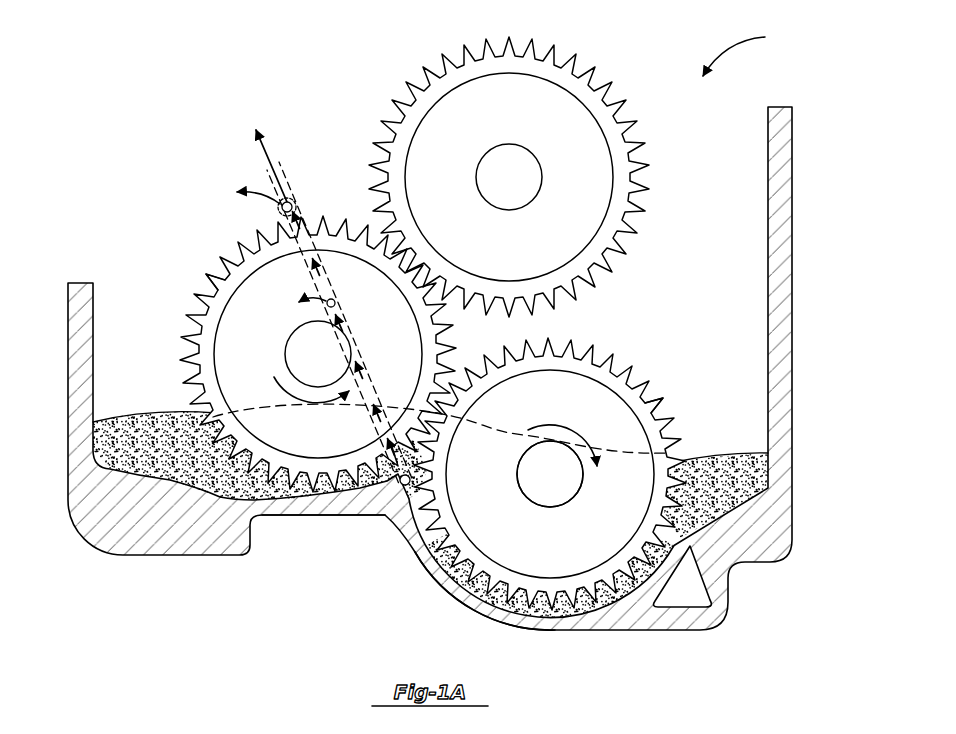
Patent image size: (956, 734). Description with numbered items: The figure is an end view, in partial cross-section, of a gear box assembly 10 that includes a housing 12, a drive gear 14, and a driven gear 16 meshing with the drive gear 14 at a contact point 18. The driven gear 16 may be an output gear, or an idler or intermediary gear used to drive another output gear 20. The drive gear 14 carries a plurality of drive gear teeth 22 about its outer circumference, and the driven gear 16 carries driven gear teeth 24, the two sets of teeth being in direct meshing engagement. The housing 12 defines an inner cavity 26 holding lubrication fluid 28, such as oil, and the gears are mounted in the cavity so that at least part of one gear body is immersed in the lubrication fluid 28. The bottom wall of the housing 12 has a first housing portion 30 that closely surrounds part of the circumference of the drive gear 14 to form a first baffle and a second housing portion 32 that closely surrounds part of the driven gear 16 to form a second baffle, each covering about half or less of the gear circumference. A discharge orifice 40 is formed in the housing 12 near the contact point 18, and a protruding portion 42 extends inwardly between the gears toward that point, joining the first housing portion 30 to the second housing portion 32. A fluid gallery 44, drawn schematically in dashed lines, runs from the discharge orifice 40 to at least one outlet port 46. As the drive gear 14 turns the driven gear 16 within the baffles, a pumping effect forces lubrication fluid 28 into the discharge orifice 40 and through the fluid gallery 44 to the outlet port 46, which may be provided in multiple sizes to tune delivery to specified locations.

The gear box assembly 10 is at (746, 50).
The housing 12 is at (788, 250).
The drive gear 14 is at (537, 552).
The driven gear 16 is at (306, 442).
The contact point 18 is at (427, 475).
The output gear 20 is at (498, 252).
The drive gear teeth 22 is at (650, 380).
The driven gear teeth 24 is at (207, 288).
The inner cavity 26 is at (700, 370).
The lubrication fluid 28 is at (733, 470).
The first housing portion 30 is at (560, 630).
The second housing portion 32 is at (313, 517).
The discharge orifice 40 is at (408, 482).
The protruding portion 42 is at (395, 496).
The fluid gallery 44 is at (367, 333).
The outlet port 46 is at (298, 203).